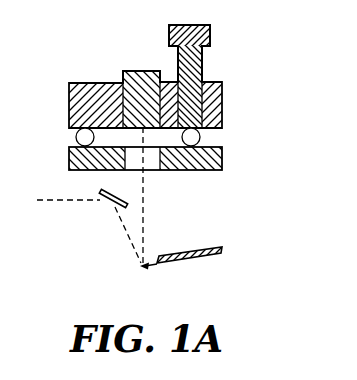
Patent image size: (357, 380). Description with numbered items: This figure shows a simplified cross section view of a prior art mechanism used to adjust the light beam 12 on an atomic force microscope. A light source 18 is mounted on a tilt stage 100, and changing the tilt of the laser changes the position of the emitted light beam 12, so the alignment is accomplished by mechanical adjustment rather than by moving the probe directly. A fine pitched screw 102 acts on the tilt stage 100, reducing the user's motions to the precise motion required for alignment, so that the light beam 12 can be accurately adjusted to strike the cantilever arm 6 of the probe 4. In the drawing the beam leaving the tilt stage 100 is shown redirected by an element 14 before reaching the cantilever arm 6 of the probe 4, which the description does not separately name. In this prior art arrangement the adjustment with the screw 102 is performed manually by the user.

The tilt stage 100 is at (222, 105).
The fine pitched screw 102 is at (210, 31).
The light source 18 is at (140, 72).
The light beam 12 is at (143, 197).
The mirror 14 is at (121, 224).
The probe 4 is at (200, 263).
The cantilever arm 6 is at (146, 270).